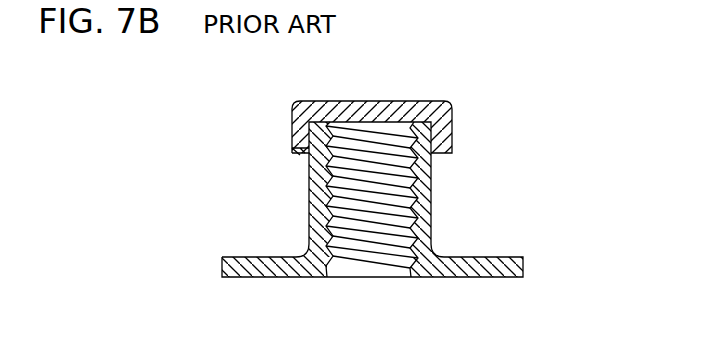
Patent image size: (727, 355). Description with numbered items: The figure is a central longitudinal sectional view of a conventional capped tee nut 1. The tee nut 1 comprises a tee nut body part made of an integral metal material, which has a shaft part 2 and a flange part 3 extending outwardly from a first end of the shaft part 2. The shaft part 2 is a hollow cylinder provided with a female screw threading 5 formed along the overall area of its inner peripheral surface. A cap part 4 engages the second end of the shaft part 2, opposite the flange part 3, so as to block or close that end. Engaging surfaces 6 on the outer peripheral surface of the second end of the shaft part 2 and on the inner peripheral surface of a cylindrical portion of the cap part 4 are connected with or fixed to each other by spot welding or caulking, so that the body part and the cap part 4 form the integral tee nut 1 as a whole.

The tee nut 1 is at (281, 128).
The shaft part 2 is at (431, 178).
The flange part 3 is at (483, 257).
The cap part 4 is at (452, 112).
The female screw threading 5 is at (328, 224).
The engaging surfaces 6 is at (293, 153).